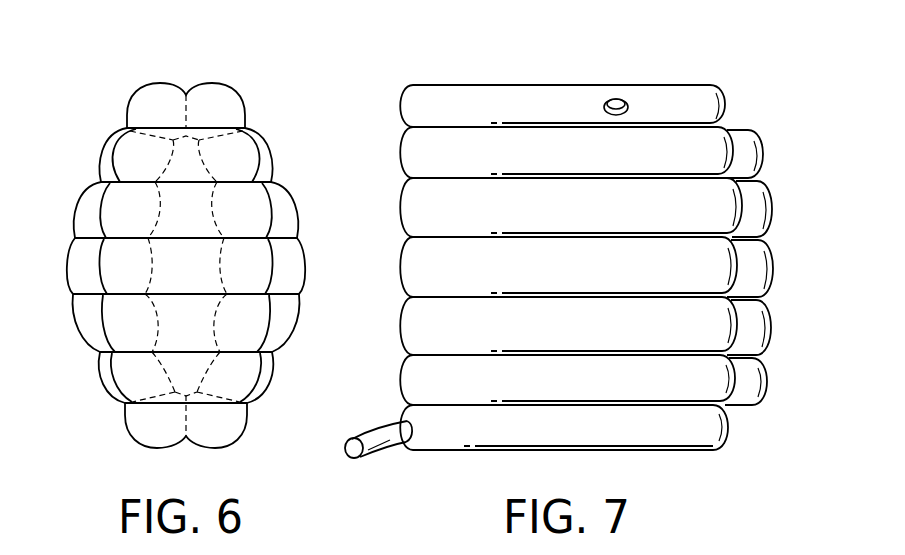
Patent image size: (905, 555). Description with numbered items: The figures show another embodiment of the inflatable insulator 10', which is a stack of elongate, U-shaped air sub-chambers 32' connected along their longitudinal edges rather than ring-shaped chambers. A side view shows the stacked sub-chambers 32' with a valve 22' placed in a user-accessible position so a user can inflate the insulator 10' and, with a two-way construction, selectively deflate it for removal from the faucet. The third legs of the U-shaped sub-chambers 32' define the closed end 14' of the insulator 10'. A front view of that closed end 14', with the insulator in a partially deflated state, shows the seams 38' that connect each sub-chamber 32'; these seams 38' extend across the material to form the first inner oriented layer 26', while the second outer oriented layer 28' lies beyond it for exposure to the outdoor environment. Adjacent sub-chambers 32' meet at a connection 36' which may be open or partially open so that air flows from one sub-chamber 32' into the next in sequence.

In FIG. 6, the inflatable insulator 10' is at (163, 233).
In FIG. 7, the inflatable insulator 10' is at (583, 242).
In FIG. 7, the closed end 14' is at (793, 268).
In FIG. 7, the valve 22' is at (630, 68).
In FIG. 6, the first inner oriented layer 26' is at (88, 266).
In FIG. 6, the second outer oriented layer 28' is at (63, 270).
In FIG. 6, the sub-chambers 32' is at (310, 211).
In FIG. 6, the connection 36' is at (116, 401).
In FIG. 6, the seams 38' is at (80, 382).